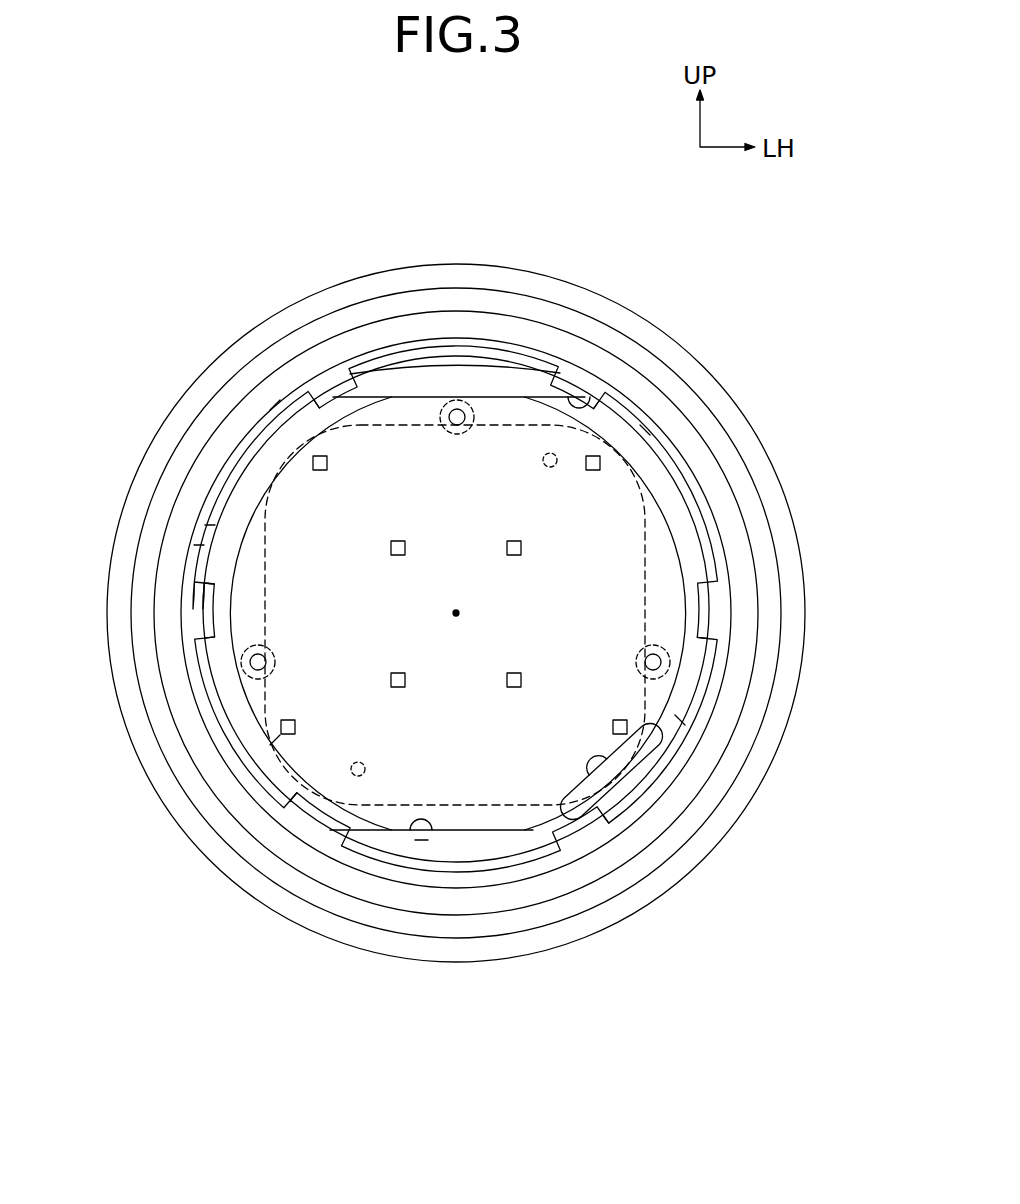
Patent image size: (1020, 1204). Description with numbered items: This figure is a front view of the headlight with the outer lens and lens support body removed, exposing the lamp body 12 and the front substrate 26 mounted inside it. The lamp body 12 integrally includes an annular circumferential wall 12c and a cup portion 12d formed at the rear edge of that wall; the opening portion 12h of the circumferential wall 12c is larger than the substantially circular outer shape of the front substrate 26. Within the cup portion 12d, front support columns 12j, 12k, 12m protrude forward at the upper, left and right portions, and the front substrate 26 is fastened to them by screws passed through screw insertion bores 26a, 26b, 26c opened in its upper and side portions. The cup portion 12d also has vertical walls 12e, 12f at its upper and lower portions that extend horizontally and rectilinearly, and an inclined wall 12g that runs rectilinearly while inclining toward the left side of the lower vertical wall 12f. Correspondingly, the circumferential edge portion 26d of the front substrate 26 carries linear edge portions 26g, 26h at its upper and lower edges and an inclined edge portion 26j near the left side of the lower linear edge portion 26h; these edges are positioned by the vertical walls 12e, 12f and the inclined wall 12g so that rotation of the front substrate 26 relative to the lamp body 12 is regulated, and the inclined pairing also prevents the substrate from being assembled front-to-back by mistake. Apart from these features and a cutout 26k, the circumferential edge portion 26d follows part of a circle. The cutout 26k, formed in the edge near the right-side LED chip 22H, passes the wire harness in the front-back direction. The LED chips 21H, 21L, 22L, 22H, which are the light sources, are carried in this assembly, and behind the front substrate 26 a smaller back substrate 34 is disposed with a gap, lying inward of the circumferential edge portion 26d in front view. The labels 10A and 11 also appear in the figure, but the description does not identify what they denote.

The center axis point 10A is at (463, 611).
The outer ring member 11 is at (197, 383).
The lamp body 12 is at (223, 472).
The annular circumferential wall 12c is at (200, 540).
The cup portion 12d is at (325, 408).
The vertical wall 12e is at (605, 388).
The vertical wall 12f is at (425, 842).
The inclined wall 12g is at (620, 768).
The opening portion 12h is at (220, 522).
The front support column 12j is at (440, 398).
The front support column 12k is at (715, 640).
The front support column 12m is at (195, 645).
The LED chip 21L is at (320, 456).
The LED chip 21H is at (398, 690).
The LED chip 22L is at (277, 407).
The LED chip 22H is at (275, 740).
The front substrate 26 is at (648, 505).
The screw insertion bore 26a is at (462, 405).
The screw insertion bore 26b is at (662, 668).
The screw insertion bore 26c is at (252, 672).
The circumferential edge portion 26d is at (222, 598).
The linear edge portion 26g is at (404, 394).
The linear edge portion 26h is at (485, 830).
The inclined edge portion 26j is at (640, 748).
The cutout 26k is at (305, 790).
The back substrate 34 is at (268, 800).